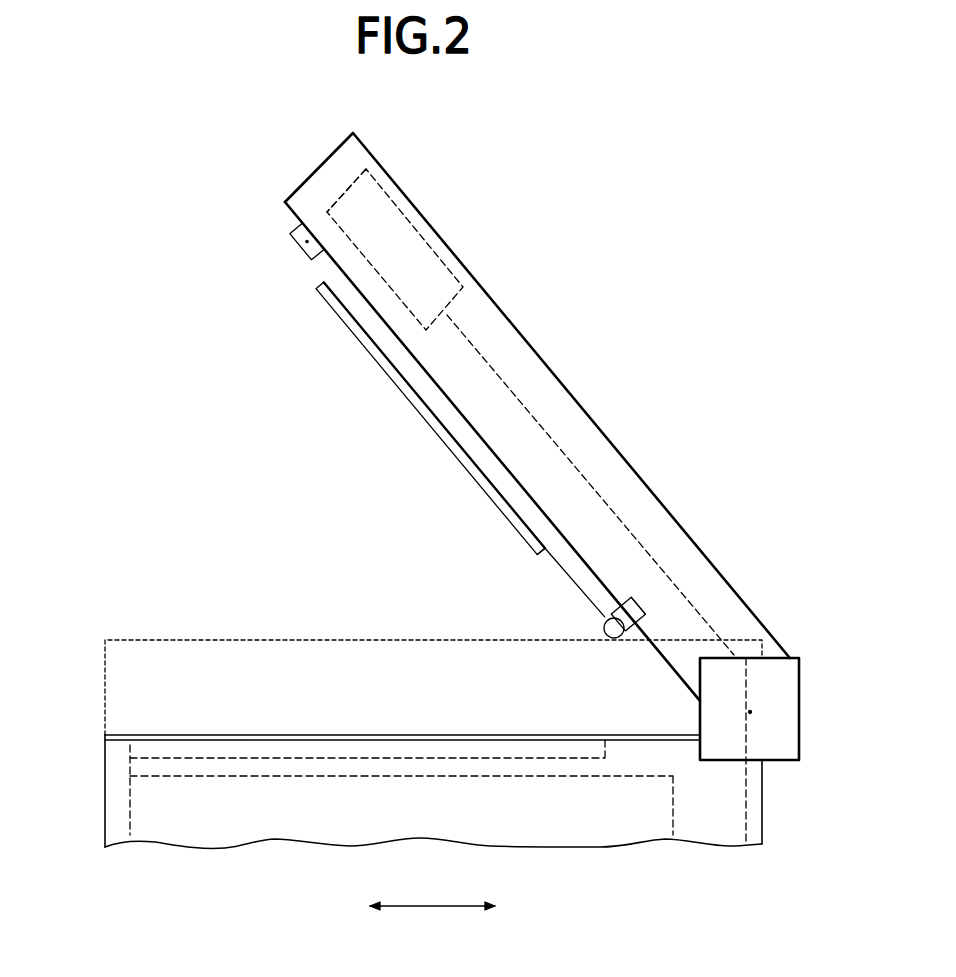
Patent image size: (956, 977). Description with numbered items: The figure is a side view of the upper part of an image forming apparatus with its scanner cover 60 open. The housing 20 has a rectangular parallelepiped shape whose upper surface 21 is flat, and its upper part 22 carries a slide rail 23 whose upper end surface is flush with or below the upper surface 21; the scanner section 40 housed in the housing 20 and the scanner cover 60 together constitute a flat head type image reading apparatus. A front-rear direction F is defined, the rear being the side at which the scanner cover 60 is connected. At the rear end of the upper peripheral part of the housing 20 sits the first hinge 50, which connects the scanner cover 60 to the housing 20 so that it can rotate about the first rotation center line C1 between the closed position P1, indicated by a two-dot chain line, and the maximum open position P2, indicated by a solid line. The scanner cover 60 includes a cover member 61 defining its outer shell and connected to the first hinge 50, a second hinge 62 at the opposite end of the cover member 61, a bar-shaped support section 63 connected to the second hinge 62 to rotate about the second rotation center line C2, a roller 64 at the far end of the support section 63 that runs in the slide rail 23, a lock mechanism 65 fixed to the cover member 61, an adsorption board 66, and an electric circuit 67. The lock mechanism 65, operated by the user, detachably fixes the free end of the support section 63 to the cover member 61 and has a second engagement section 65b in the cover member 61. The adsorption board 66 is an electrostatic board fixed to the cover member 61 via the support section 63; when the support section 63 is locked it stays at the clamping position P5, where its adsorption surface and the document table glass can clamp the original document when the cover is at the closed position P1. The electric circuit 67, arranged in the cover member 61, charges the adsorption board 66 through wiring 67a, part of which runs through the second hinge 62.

The housing 20 is at (758, 822).
The upper surface 21 is at (148, 735).
The upper part 22 is at (122, 745).
The slide rail 23 is at (565, 747).
The scanner section 40 is at (233, 828).
The first hinge 50 is at (789, 677).
The scanner cover 60 is at (584, 418).
The cover member 61 is at (534, 351).
The second hinge 62 is at (297, 251).
The support section 63 is at (512, 497).
The roller 64 is at (604, 630).
The lock mechanism 65 is at (643, 611).
The second engagement section 65b is at (633, 597).
The adsorption board 66 is at (458, 466).
The electric circuit 67 is at (423, 261).
The wiring 67a is at (322, 224).
The first rotation center line C1 is at (750, 712).
The second rotation center line C2 is at (298, 232).
The closed position P1 is at (108, 668).
The maximum open position P2 is at (634, 494).
The clamping position P5 is at (410, 388).
The front-rear direction F is at (432, 918).